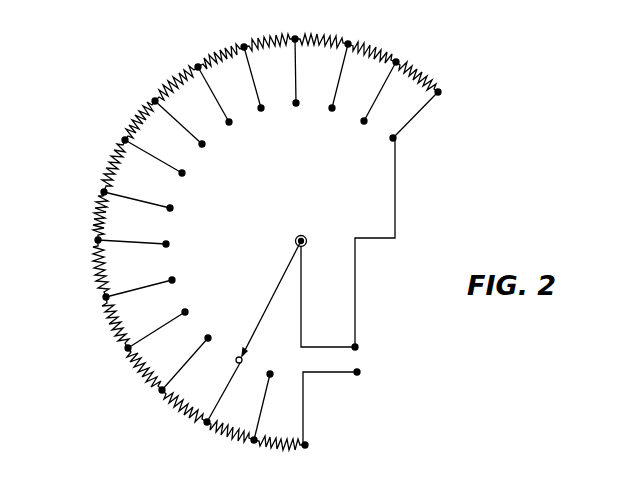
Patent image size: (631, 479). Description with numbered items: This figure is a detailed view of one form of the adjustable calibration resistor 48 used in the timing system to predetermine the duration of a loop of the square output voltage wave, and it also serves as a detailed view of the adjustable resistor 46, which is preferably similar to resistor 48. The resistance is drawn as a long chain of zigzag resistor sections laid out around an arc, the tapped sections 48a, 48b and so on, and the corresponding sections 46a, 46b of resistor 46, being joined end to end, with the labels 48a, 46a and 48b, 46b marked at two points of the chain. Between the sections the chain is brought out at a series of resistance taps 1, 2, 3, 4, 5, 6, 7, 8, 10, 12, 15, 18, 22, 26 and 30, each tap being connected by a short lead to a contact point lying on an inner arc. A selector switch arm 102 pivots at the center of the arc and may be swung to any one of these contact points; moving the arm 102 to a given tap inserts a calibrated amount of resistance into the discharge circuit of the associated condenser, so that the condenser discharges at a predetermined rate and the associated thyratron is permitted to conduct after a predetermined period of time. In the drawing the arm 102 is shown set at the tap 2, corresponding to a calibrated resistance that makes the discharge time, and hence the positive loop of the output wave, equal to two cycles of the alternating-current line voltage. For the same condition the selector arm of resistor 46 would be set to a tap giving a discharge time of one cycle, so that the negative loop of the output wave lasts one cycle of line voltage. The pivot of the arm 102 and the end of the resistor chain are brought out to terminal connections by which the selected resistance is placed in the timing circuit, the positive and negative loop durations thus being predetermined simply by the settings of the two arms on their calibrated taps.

The resistor tap 1 is at (295, 367).
The resistor tap 2 is at (266, 353).
The resistor tap 3 is at (234, 340).
The resistor tap 4 is at (212, 314).
The resistor tap 5 is at (199, 283).
The resistor tap 6 is at (192, 247).
The resistor tap 7 is at (196, 211).
The resistor tap 8 is at (208, 177).
The resistor tap 10 is at (235, 148).
The resistor tap 12 is at (253, 129).
The resistor tap 15 is at (285, 115).
The resistor tap 18 is at (320, 109).
The resistor tap 22 is at (350, 115).
The resistor tap 26 is at (382, 129).
The resistor tap 30 is at (428, 146).
The adjustable resistor 48 is at (235, 256).
The adjustable resistor 46 is at (297, 200).
The tapped section 48a is at (253, 457).
The resistor winding end terminal 46a is at (267, 450).
The tapped section 48b is at (81, 322).
The resistor winding section 46b is at (110, 309).
The selector switch arm 102 is at (278, 286).